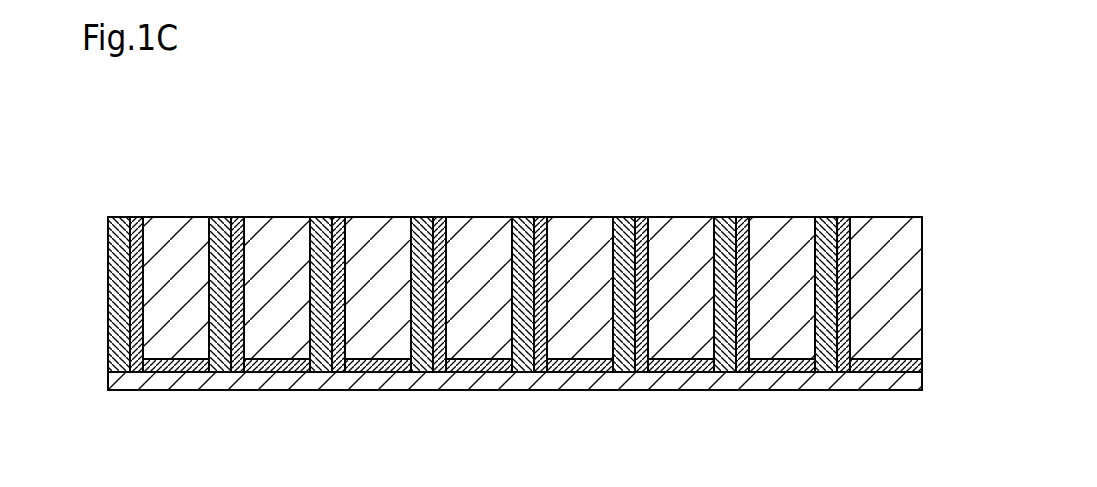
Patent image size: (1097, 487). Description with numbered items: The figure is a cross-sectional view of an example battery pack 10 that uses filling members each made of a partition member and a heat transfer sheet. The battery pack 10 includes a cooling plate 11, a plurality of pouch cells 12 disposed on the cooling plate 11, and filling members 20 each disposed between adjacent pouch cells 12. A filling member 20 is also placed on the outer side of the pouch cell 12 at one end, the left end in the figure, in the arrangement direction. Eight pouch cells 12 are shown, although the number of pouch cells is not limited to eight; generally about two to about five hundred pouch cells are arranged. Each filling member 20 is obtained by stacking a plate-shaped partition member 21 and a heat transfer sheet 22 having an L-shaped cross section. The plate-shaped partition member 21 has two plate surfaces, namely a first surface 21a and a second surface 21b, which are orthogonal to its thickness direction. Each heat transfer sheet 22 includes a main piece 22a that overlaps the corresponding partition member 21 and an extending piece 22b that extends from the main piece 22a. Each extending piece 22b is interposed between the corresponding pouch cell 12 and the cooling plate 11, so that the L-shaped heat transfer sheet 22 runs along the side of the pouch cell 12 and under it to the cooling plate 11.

The battery pack 10 is at (945, 208).
The cooling plate 11 is at (858, 390).
The pouch cell 12 is at (511, 246).
The filling member 20 is at (482, 247).
The partition member 21 is at (446, 268).
The first surface 21a is at (108, 289).
The second surface 21b is at (137, 336).
The heat transfer sheet 22 is at (530, 268).
The main piece 22a is at (532, 288).
The extending piece 22b is at (532, 339).